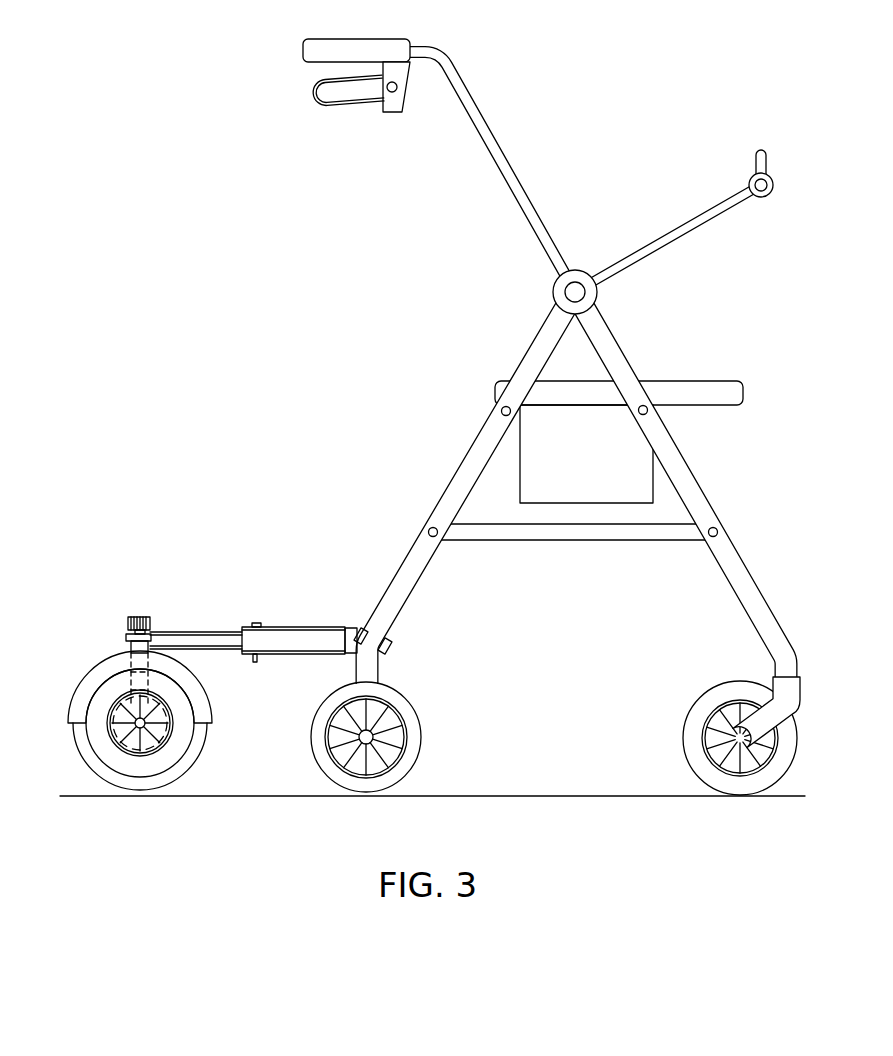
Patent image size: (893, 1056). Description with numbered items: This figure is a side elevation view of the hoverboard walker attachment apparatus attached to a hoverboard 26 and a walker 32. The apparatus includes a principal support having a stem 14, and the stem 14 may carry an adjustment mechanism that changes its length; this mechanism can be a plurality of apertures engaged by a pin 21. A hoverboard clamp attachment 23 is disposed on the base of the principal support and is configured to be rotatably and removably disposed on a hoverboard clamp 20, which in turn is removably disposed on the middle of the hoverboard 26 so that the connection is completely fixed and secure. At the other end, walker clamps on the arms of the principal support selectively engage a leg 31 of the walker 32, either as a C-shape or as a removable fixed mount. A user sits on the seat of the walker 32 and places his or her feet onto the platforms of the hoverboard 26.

The stem 14 is at (290, 632).
The hoverboard clamp 20 is at (130, 643).
The pin 21 is at (255, 662).
The hoverboard clamp attachment 23 is at (128, 636).
The hoverboard 26 is at (95, 723).
The leg 31 is at (408, 590).
The walker 32 is at (550, 448).